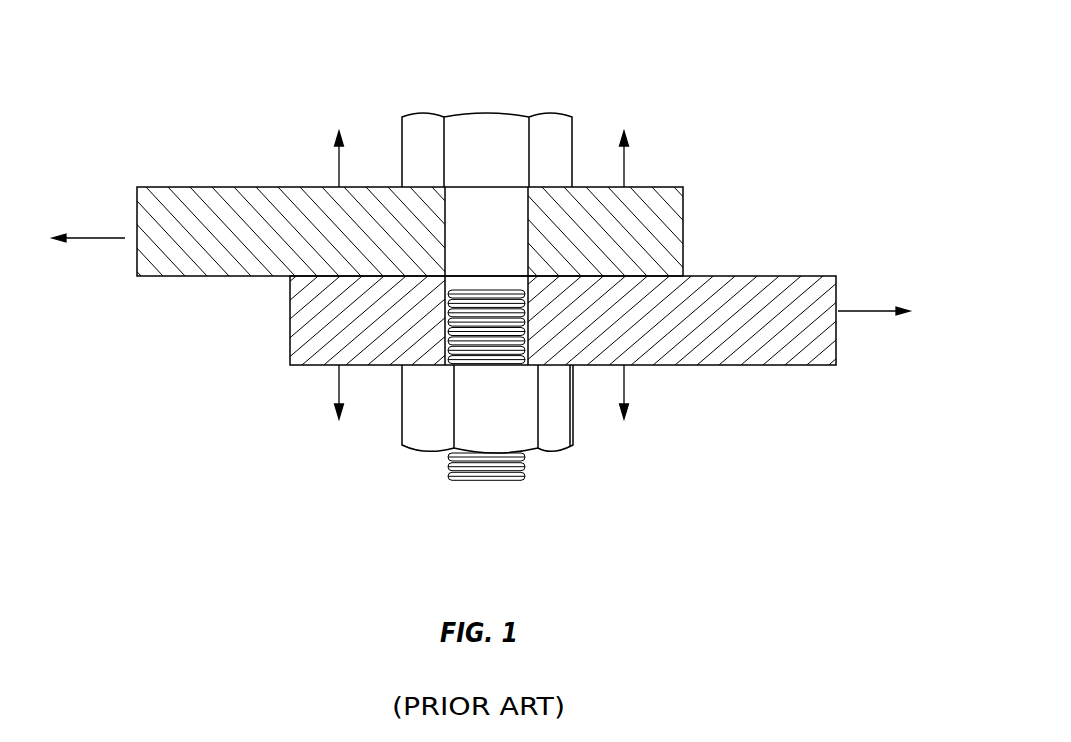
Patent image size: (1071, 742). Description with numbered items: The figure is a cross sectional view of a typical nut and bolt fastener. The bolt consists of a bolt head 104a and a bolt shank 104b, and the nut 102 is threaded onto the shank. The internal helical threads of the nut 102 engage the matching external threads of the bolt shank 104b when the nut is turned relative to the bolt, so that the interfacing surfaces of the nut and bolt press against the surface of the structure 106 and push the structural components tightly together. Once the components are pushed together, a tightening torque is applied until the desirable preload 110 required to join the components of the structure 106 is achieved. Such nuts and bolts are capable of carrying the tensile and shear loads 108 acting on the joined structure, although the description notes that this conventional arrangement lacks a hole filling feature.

The nut 102 is at (410, 397).
The bolt head 104a is at (517, 108).
The bolt shank 104b is at (517, 253).
The structure 106 is at (213, 185).
The tensile and shear loads 108 is at (481, 255).
The preload 110 is at (605, 113).